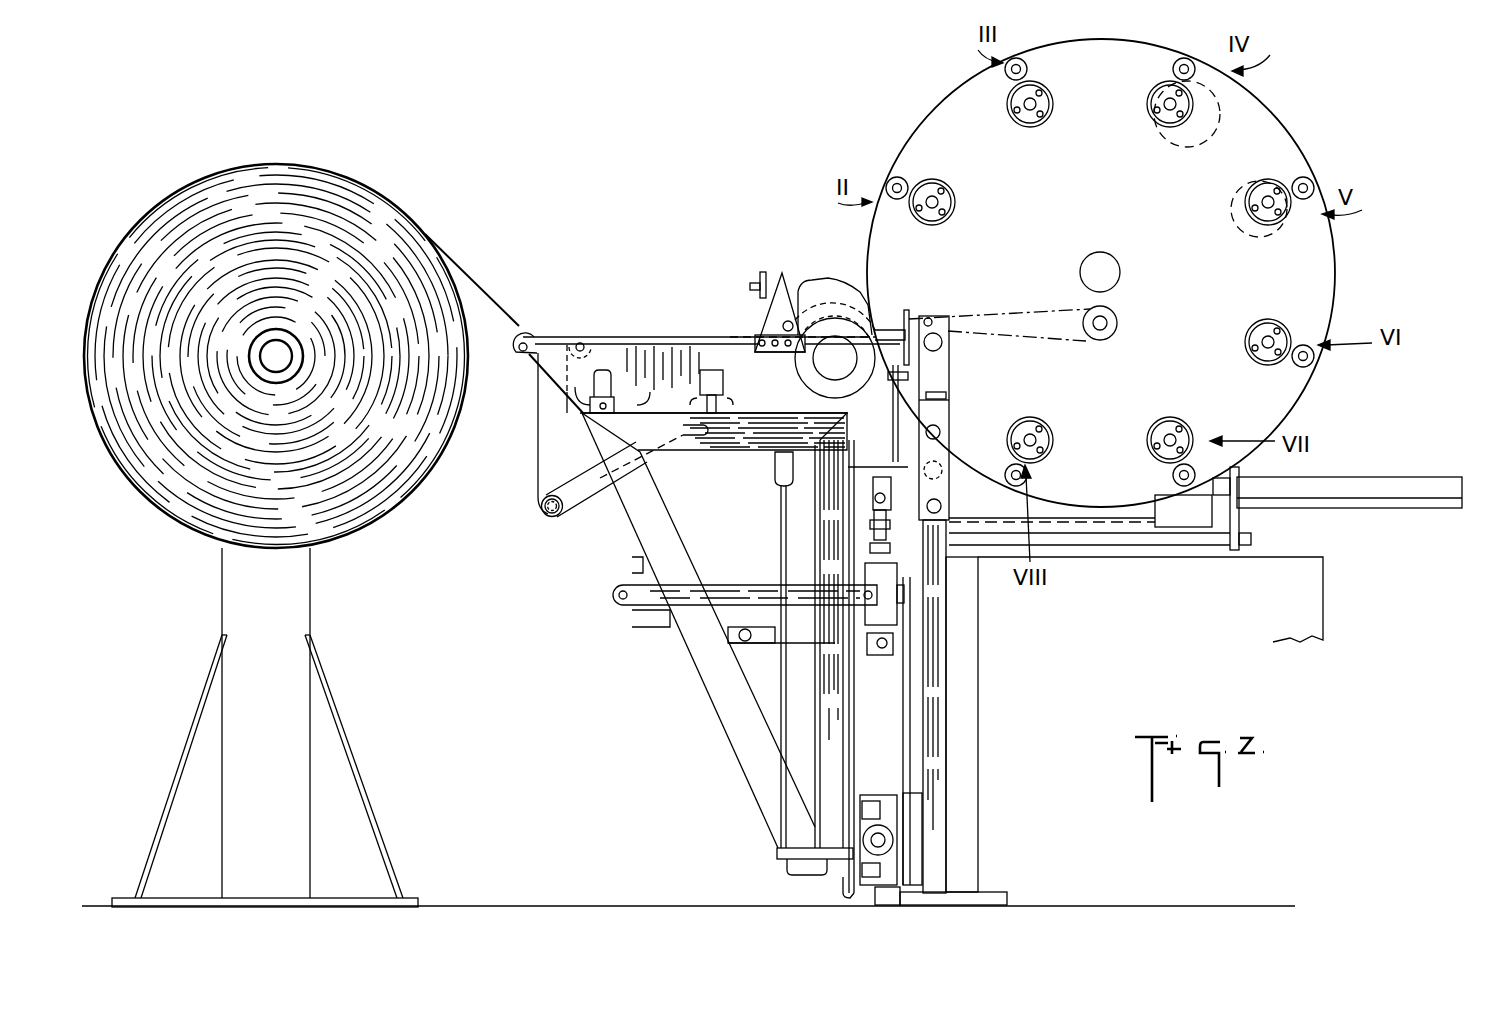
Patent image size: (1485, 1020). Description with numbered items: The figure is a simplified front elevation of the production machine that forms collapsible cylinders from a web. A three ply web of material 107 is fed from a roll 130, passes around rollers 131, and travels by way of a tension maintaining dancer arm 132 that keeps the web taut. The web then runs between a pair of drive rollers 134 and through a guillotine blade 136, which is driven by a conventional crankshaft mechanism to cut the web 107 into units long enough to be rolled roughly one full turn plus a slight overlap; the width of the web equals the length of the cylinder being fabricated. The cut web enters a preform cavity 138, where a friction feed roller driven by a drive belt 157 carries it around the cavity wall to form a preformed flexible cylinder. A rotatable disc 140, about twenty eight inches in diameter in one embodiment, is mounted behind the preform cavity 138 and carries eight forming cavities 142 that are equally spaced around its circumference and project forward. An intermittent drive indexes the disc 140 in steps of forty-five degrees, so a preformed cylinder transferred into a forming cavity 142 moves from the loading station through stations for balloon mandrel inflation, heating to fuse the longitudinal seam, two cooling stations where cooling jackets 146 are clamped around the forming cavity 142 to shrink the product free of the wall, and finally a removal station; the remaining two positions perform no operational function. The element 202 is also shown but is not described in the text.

The three ply web of material 107 is at (497, 305).
The roll 130 is at (425, 233).
The rollers 131 is at (543, 511).
The tension maintaining dancer arm 132 is at (582, 500).
The drive rollers 134 is at (835, 298).
The guillotine blade 136 is at (907, 312).
The preform cavity 138 is at (945, 346).
The rotatable disc 140 is at (1275, 145).
The forming cavities 142 is at (1044, 106).
The cooling jackets 146 is at (1196, 136).
The drive belt 157 is at (1058, 308).
The drive shaft 202 is at (1163, 522).